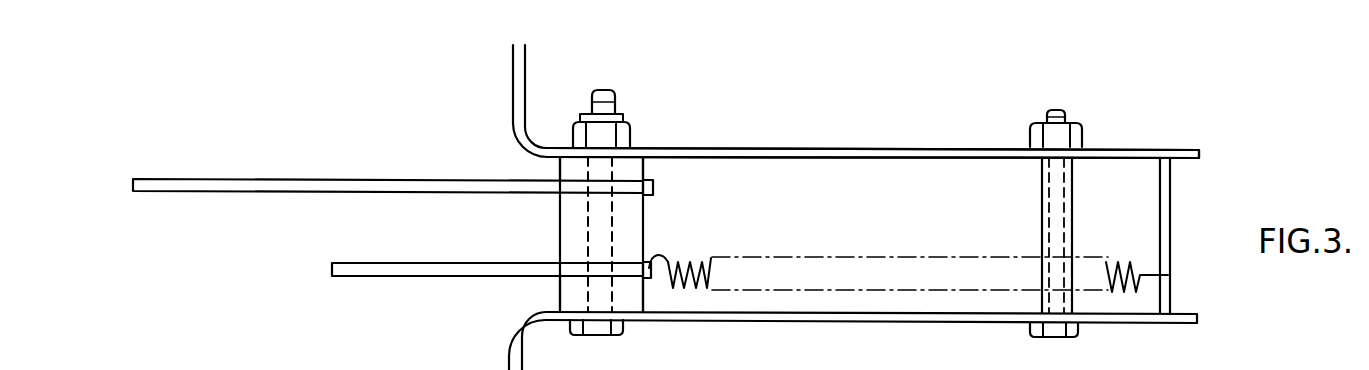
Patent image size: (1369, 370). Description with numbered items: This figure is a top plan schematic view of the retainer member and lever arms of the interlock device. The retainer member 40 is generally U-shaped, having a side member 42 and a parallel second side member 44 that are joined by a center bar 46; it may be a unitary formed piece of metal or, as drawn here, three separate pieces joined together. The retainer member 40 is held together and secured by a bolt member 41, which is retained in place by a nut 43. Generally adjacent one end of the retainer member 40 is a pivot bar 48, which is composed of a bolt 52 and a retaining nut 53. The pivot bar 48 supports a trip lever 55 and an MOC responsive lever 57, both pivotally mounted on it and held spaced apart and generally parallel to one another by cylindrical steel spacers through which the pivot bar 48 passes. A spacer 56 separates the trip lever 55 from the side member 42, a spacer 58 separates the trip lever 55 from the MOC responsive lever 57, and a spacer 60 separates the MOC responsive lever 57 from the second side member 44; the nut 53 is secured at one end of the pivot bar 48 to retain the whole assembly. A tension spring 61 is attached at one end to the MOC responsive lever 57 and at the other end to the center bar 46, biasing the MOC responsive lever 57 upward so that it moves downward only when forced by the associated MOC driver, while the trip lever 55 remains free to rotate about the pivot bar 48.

The retainer member 40 is at (1149, 150).
The bolt member 41 is at (1078, 334).
The side member 42 is at (810, 147).
The nut 43 is at (1082, 133).
The second side member 44 is at (872, 321).
The center bar 46 is at (1172, 210).
The pivot bar 48 is at (611, 176).
The bolt 52 is at (617, 334).
The retaining nut 53 is at (590, 118).
The trip lever 55 is at (347, 184).
The spacer 56 is at (557, 173).
The MOC responsive lever 57 is at (420, 270).
The spacer 58 is at (560, 217).
The spacer 60 is at (560, 290).
The spring 61 is at (868, 257).